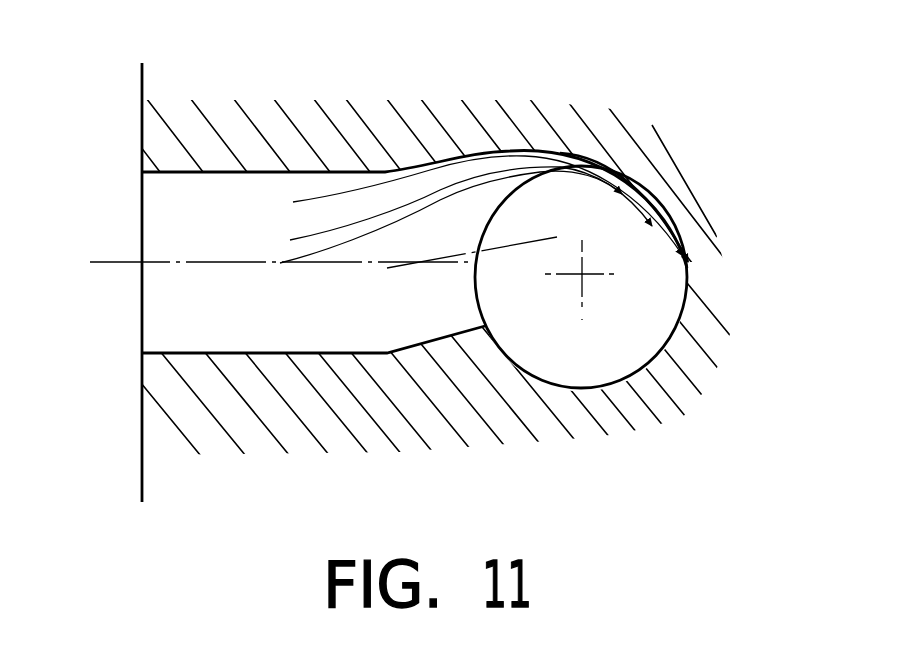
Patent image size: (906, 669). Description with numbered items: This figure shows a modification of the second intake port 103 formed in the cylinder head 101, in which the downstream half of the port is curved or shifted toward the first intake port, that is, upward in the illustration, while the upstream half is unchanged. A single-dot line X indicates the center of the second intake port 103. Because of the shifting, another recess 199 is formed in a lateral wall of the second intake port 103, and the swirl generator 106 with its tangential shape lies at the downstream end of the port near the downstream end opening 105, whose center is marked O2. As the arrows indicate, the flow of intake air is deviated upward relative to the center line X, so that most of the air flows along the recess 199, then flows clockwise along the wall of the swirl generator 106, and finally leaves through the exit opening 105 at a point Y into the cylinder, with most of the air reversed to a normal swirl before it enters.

The cylinder head 101 is at (167, 134).
The second intake port 103 is at (168, 332).
The downstream end opening of the second intake port 105 is at (541, 364).
The swirl generator 106 is at (443, 311).
The recess 199 is at (550, 155).
The center line of the second intake port X is at (213, 263).
The point of the exit opening Y is at (686, 269).
The center of the second intake port opening O2 is at (583, 272).